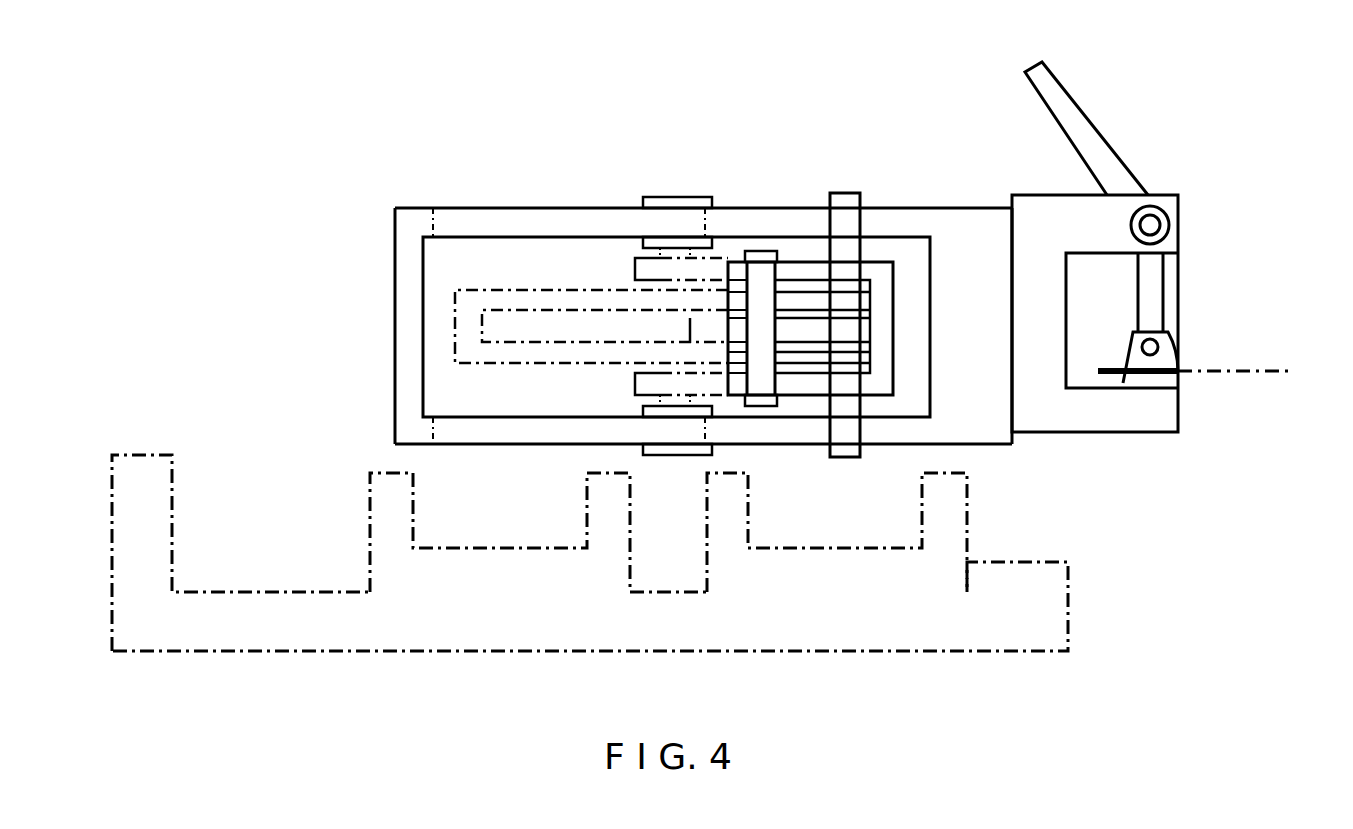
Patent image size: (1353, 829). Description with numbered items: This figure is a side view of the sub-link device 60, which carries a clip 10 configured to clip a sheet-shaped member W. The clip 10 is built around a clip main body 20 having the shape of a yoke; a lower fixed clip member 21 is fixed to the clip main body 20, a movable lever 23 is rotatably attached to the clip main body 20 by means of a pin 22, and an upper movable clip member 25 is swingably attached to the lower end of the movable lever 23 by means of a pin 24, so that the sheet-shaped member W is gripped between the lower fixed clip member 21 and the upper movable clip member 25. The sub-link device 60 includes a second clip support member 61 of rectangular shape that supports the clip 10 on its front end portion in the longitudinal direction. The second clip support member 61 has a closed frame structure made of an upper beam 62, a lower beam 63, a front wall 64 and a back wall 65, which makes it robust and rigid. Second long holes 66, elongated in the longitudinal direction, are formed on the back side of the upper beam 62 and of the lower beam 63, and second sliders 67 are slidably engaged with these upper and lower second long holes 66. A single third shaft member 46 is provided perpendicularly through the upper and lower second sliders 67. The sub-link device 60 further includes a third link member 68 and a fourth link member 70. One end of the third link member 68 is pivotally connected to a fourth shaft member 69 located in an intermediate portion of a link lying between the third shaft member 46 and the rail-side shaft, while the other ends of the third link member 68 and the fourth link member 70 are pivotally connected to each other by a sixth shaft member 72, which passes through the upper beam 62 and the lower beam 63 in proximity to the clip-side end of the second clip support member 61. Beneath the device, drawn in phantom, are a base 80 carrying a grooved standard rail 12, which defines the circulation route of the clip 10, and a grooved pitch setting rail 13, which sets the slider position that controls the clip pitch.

The clip 10 is at (1152, 256).
The clip main body 20 is at (1170, 418).
The lower fixed clip member 21 is at (1170, 378).
The pin 22 is at (1166, 226).
The movable lever 23 is at (1083, 123).
The pin 24 is at (1165, 330).
The upper movable clip member 25 is at (1165, 360).
The sheet-shaped member W is at (1262, 370).
The third shaft member 46 is at (660, 343).
The sub-link device 60 is at (703, 287).
The second clip support member 61 is at (895, 172).
The upper beam 62 is at (731, 216).
The lower beam 63 is at (778, 436).
The front wall 64 is at (962, 222).
The back wall 65 is at (410, 216).
The second long holes 66 is at (471, 220).
The second sliders 67 is at (653, 196).
The third link member 68 is at (812, 383).
The fourth shaft member 69 is at (762, 300).
The fourth link member 70 is at (841, 300).
The sixth shaft member 72 is at (845, 406).
The standard rail 12 is at (762, 580).
The pitch setting rail 13 is at (425, 580).
The base 80 is at (1018, 633).